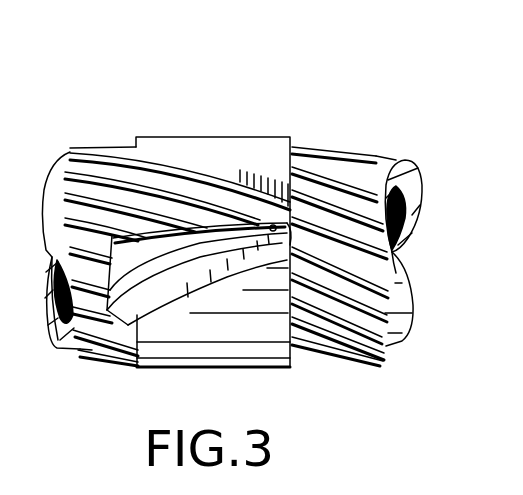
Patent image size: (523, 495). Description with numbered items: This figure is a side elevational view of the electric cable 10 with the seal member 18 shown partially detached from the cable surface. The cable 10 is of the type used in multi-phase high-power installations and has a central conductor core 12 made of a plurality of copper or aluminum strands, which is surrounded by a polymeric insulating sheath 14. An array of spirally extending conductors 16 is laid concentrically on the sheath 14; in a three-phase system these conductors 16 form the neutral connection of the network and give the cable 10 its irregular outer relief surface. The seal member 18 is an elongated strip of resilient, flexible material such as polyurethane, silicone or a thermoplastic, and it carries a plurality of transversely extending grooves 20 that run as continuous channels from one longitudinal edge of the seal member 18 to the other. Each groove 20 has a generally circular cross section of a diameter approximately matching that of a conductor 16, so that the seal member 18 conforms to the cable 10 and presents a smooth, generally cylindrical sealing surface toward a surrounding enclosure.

The electric cable 10 is at (93, 102).
The central conductor core 12 is at (417, 211).
The polymeric insulating sheath 14 is at (397, 176).
The spirally extending conductors 16 is at (80, 148).
The seal member 18 is at (237, 115).
The grooves 20 is at (150, 267).